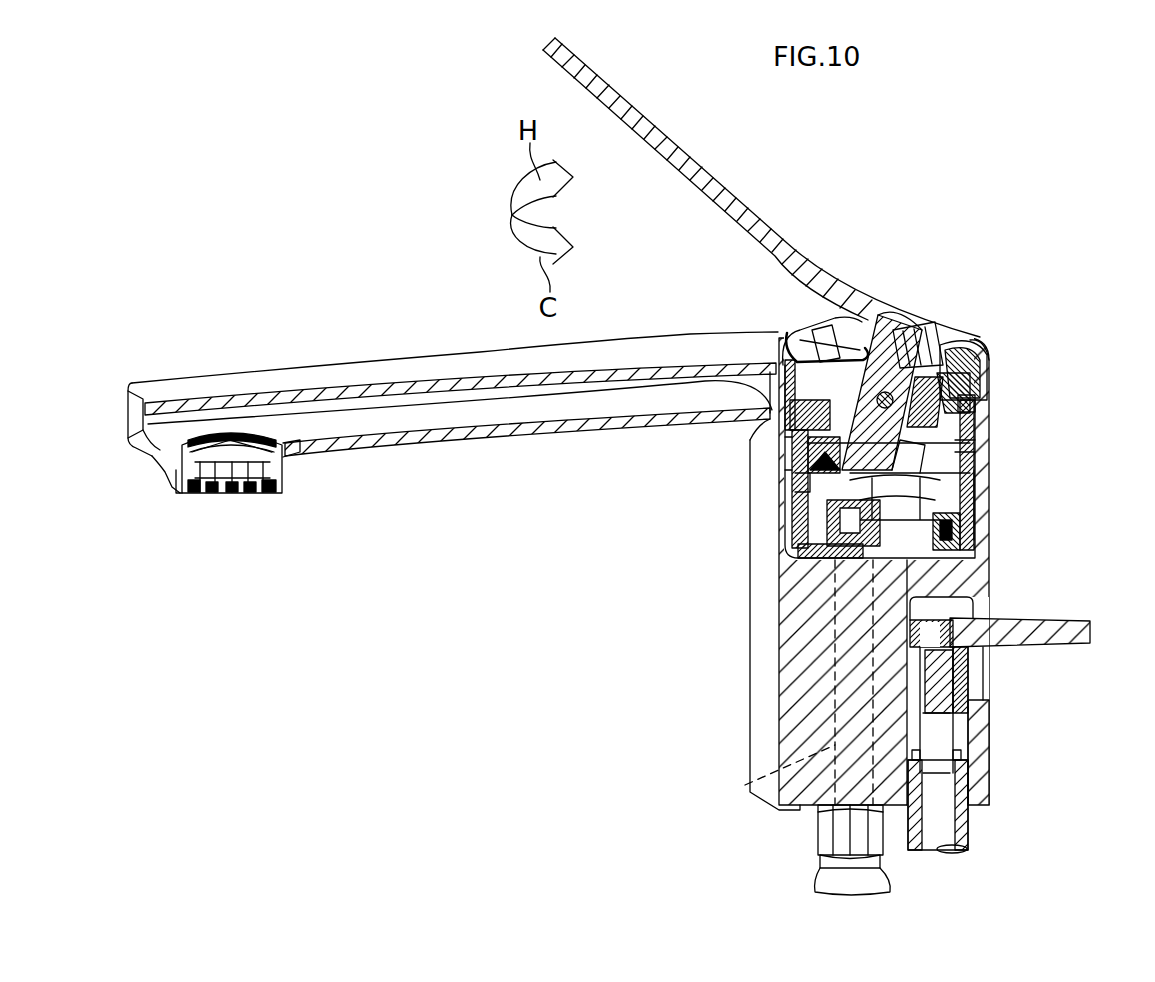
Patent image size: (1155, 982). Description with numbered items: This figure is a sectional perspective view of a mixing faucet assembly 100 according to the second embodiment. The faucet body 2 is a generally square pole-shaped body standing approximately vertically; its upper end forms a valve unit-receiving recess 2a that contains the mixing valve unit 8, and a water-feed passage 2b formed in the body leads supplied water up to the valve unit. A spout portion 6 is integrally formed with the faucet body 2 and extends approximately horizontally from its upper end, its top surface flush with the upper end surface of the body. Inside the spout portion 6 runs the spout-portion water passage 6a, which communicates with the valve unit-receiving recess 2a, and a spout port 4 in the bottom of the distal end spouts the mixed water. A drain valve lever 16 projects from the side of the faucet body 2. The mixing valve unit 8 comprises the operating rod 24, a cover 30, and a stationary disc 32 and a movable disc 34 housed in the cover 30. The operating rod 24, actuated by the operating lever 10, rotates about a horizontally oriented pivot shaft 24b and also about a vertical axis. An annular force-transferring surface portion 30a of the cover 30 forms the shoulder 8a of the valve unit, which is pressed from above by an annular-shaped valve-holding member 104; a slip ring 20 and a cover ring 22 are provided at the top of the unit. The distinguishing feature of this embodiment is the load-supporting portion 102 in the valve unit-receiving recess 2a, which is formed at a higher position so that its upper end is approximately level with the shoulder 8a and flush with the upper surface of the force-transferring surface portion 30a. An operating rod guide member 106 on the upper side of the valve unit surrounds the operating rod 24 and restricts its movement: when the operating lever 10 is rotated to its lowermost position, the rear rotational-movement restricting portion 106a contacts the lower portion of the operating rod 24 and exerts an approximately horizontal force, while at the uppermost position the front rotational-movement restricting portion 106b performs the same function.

The faucet body 2 is at (760, 690).
The valve unit-receiving recess 2a is at (985, 530).
The water-feed passage 2b is at (745, 785).
The spout port 4 is at (192, 495).
The spout portion 6 is at (474, 362).
The spout-portion water passage 6a is at (565, 410).
The mixing valve unit 8 is at (982, 510).
The shoulder 8a is at (985, 420).
The operating lever 10 is at (664, 130).
The drain valve lever 16 is at (1083, 621).
The slip ring 20 is at (775, 345).
The cover ring 22 is at (830, 333).
The operating rod 24 is at (893, 338).
The pivot shaft 24b is at (882, 335).
The cover 30 is at (805, 540).
The force-transferring surface portion 30a is at (792, 458).
The stationary disc 32 is at (805, 520).
The movable disc 34 is at (800, 500).
The mixing faucet assembly 100 is at (475, 597).
The load-supporting portion 102 is at (985, 445).
The valve-holding member 104 is at (985, 412).
The operating rod guide member 106 is at (942, 342).
The rotational-movement restricting portion 106a is at (982, 358).
The rotational-movement restricting portion 106b is at (800, 480).